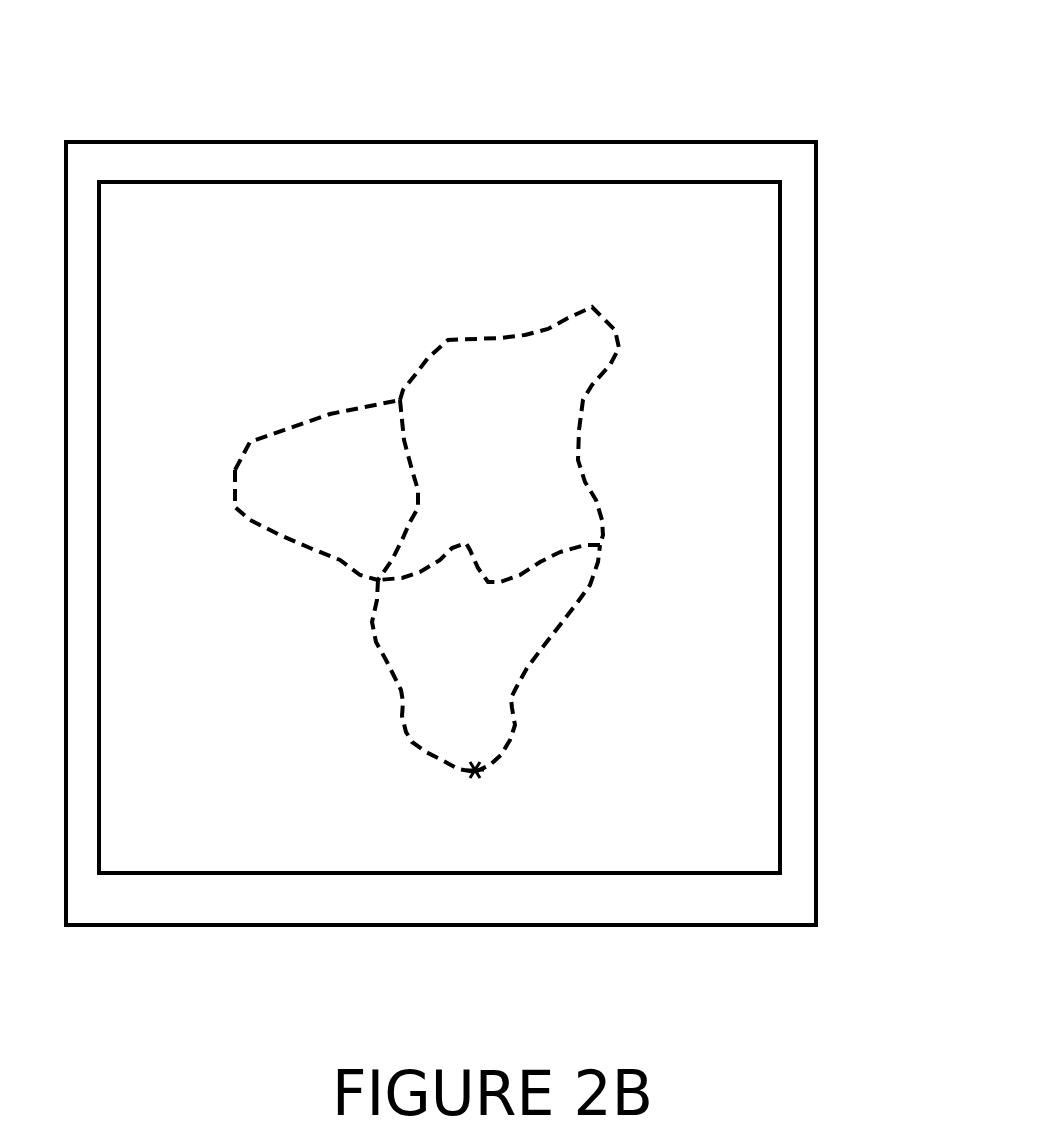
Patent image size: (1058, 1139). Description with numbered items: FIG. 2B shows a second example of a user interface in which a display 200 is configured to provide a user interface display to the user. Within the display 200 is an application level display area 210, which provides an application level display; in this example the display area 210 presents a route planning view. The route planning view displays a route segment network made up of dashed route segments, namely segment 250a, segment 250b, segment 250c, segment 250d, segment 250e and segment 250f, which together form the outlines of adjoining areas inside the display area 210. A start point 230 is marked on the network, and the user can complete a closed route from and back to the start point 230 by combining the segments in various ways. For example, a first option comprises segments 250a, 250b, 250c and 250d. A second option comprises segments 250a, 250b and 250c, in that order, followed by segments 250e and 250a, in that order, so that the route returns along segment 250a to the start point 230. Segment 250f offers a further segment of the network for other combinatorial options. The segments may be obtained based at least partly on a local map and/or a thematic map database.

The display 200 is at (132, 140).
The application level display area 210 is at (247, 181).
The start point 230 is at (476, 772).
The segment 250a is at (390, 675).
The segment 250b is at (420, 497).
The segment 250c is at (615, 333).
The segment 250d is at (541, 652).
The segment 250e is at (478, 553).
The segment 250f is at (235, 489).